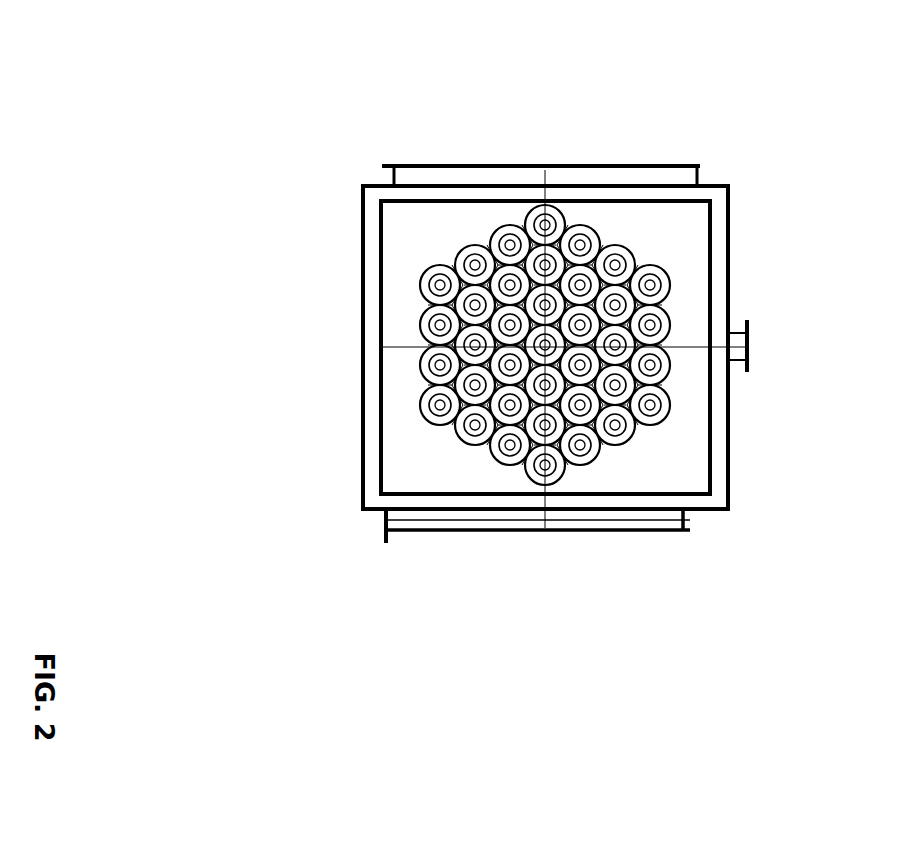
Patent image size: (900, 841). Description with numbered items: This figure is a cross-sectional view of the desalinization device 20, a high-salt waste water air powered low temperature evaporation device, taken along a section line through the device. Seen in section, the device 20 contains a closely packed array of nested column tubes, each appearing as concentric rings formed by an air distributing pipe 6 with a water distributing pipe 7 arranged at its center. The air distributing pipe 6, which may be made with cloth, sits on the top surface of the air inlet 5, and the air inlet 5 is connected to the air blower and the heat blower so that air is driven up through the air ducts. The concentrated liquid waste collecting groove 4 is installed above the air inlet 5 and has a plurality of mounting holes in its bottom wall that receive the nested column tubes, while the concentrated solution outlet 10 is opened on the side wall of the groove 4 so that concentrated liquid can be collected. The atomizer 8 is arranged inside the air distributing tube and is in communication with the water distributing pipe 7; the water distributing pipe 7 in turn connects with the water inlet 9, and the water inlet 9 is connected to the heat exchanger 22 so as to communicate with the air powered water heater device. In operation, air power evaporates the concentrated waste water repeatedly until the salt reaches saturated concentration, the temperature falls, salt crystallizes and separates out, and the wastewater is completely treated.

The concentrated liquid waste collecting groove 4 is at (493, 228).
The air inlet 5 is at (510, 165).
The air distributing pipe 6 is at (588, 232).
The water distributing pipe 7 is at (622, 243).
The atomizer 8 is at (660, 267).
The water inlet 9 is at (384, 532).
The concentrated solution outlet 10 is at (749, 322).
The desalinization device 20 is at (745, 162).
The heat exchanger 22 is at (503, 527).